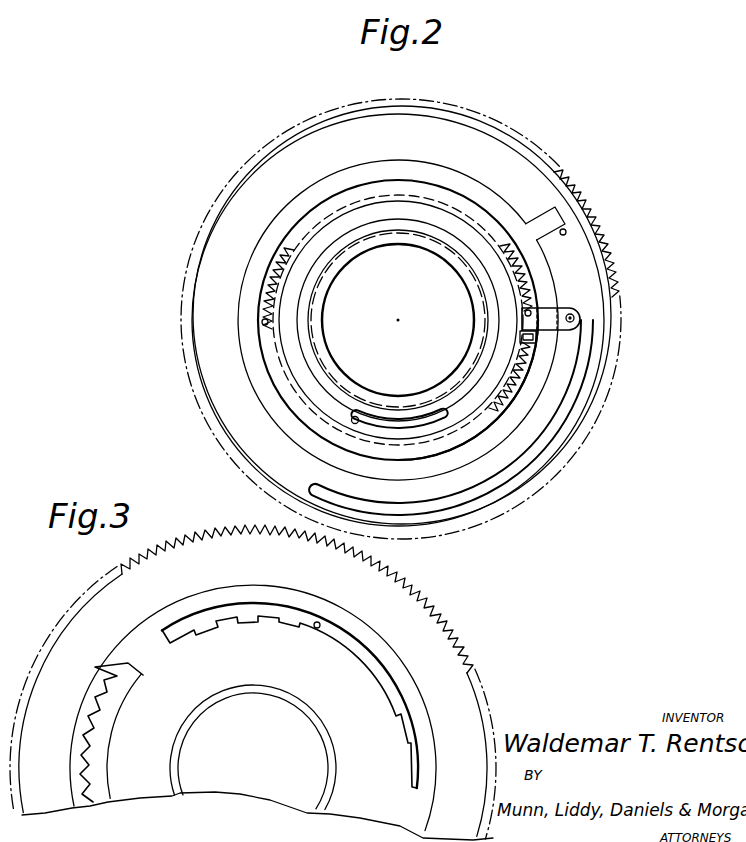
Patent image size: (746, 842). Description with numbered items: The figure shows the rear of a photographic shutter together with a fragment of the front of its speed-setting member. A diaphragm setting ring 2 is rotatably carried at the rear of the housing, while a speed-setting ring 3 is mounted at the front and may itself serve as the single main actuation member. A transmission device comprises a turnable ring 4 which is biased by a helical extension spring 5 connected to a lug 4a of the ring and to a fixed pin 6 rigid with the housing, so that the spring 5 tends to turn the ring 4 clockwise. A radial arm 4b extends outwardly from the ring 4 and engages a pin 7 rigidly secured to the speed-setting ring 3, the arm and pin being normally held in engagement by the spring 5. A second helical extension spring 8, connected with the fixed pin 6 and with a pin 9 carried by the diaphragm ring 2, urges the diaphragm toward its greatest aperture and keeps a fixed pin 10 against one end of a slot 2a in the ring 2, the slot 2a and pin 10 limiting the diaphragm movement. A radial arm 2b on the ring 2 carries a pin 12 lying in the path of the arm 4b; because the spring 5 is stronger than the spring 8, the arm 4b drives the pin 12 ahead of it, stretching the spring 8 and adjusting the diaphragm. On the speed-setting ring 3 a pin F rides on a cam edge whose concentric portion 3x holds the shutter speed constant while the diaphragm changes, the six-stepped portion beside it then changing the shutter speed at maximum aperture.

In FIG. 2, the diaphragm setting ring 2 is at (370, 215).
In FIG. 2, the slot 2a is at (415, 432).
In FIG. 2, the radial arm 2b is at (537, 333).
In FIG. 2, the speed-setting ring 3 is at (565, 185).
In FIG. 3, the speed-setting ring 3 is at (430, 628).
In FIG. 3, the concentric portion of the cam edge 3x is at (318, 629).
In FIG. 2, the turnable ring 4 is at (422, 165).
In FIG. 2, the lug 4a is at (542, 345).
In FIG. 2, the radial arm 4b is at (538, 240).
In FIG. 2, the helical extension spring 5 is at (500, 398).
In FIG. 2, the fixed pin 6 is at (262, 322).
In FIG. 2, the pin 7 is at (566, 232).
In FIG. 2, the second helical extension spring 8 is at (530, 275).
In FIG. 2, the pin 9 is at (525, 314).
In FIG. 2, the fixed pin 10 is at (356, 418).
In FIG. 2, the pin 12 is at (582, 318).
In FIG. 3, the pin F is at (322, 622).